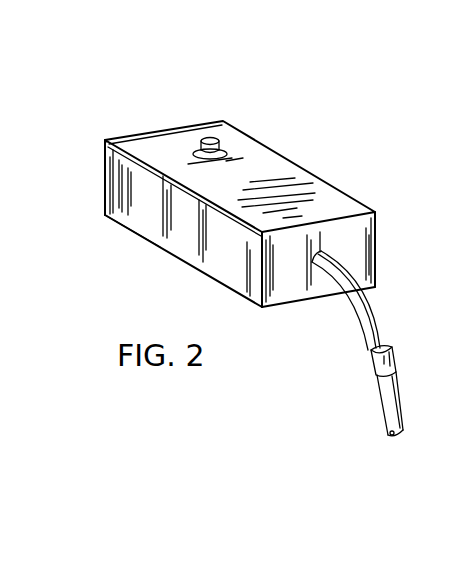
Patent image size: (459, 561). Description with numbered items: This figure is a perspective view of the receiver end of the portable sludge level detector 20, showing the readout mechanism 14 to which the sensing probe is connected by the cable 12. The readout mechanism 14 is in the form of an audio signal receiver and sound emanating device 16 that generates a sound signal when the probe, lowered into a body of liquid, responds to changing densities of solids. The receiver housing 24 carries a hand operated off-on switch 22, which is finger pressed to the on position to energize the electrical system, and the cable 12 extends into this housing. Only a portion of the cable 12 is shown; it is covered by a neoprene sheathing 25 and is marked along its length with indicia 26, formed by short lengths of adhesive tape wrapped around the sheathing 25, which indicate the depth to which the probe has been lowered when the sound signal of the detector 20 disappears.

The cable 12 is at (380, 423).
The readout mechanism 14 is at (342, 147).
The sound emanating device 16 is at (254, 114).
The portable sludge level detector 20 is at (100, 100).
The hand operated off-on switch 22 is at (196, 117).
The receiver housing 24 is at (147, 220).
The neoprene sheathing 25 is at (381, 328).
The indicia 26 is at (367, 376).